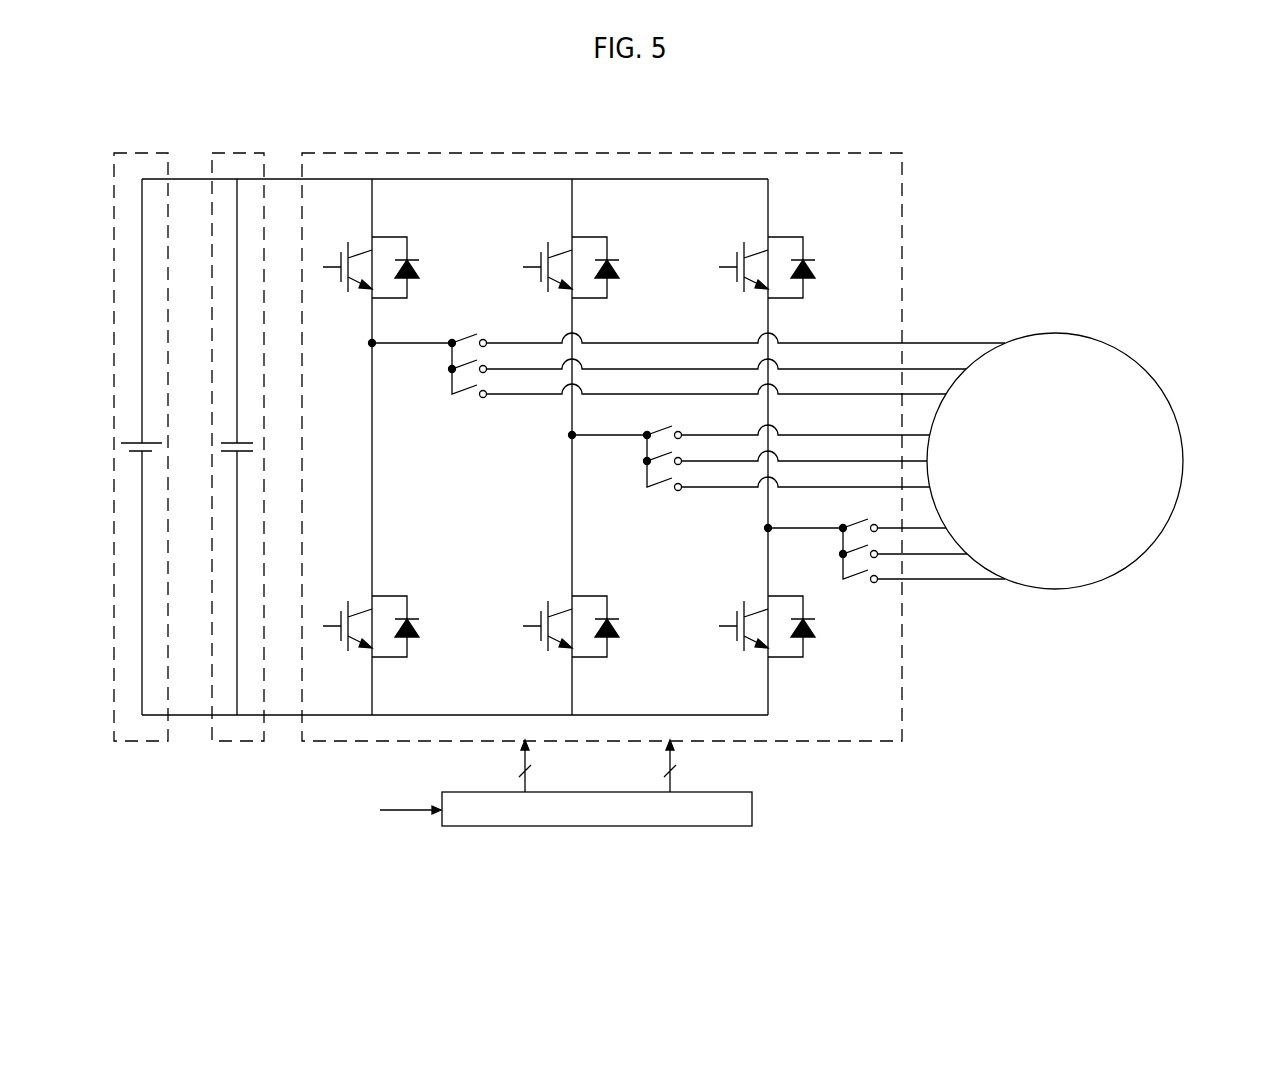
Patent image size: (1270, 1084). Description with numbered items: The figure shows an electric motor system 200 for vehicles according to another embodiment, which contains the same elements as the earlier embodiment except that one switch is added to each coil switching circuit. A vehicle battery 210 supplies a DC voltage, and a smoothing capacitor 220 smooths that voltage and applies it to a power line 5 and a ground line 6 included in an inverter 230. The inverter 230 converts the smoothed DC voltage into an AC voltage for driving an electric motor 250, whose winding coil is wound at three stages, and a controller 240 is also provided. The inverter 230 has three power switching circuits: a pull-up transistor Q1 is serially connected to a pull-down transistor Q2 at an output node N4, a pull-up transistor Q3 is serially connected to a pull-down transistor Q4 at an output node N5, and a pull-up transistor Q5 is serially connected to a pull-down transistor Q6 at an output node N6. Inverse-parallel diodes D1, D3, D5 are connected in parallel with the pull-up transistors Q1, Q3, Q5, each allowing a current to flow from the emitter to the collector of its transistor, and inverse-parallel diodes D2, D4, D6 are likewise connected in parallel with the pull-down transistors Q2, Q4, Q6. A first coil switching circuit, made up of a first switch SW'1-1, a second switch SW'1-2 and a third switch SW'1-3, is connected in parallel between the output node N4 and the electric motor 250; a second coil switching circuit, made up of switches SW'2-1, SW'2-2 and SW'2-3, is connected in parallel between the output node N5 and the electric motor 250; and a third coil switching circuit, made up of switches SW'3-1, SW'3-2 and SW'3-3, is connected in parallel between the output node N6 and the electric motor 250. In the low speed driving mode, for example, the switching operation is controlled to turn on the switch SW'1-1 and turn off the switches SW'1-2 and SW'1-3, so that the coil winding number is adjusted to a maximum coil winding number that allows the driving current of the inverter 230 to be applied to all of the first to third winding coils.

The motor driving system 200 is at (516, 92).
The battery 210 is at (140, 150).
The capacitor 220 is at (238, 150).
The inverter 230 is at (602, 152).
The controller 240 is at (752, 808).
The electric motor 250 is at (1055, 331).
The power line 5 is at (416, 178).
The ground line 6 is at (708, 715).
The pull-up transistor Q1 is at (347, 254).
The pull-down transistor Q2 is at (347, 613).
The pull-up transistor Q3 is at (547, 254).
The pull-down transistor Q4 is at (547, 613).
The pull-up transistor Q5 is at (743, 254).
The pull-down transistor Q6 is at (743, 613).
The inverse-parallel diode D1 is at (395, 257).
The inverse-parallel diode D2 is at (395, 616).
The inverse-parallel diode D3 is at (595, 257).
The inverse-parallel diode D4 is at (595, 616).
The inverse-parallel diode D5 is at (791, 257).
The inverse-parallel diode D6 is at (791, 616).
The output node N4 is at (372, 343).
The output node N5 is at (572, 435).
The output node N6 is at (768, 528).
The 1-1st switch SW'1-1 is at (688, 326).
The 1-2nd switch SW'1-2 is at (673, 361).
The 1-3rd switch SW'1-3 is at (689, 395).
The 2-1st switch SW'2-1 is at (751, 418).
The 2-2nd switch SW'2-2 is at (751, 453).
The 2-3rd switch SW'2-3 is at (779, 487).
The 3-1st switch SW'3-1 is at (857, 511).
The 3-2nd switch SW'3-2 is at (869, 546).
The 3-3rd switch SW'3-3 is at (914, 580).